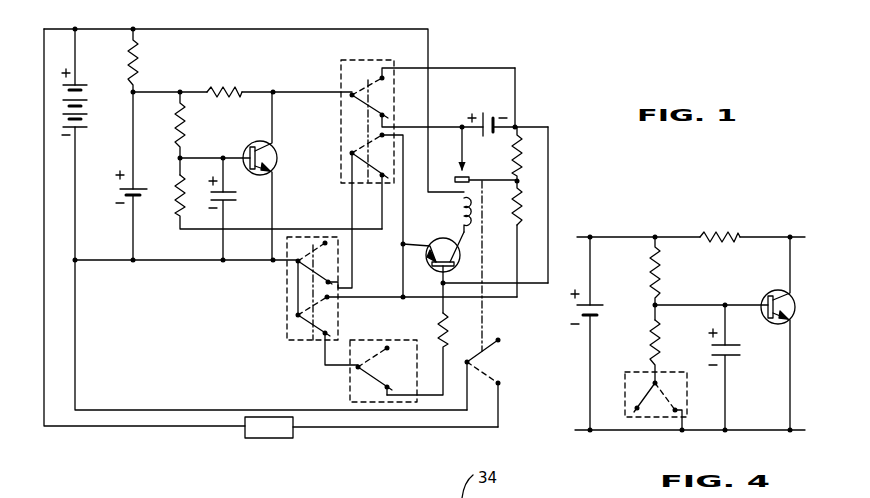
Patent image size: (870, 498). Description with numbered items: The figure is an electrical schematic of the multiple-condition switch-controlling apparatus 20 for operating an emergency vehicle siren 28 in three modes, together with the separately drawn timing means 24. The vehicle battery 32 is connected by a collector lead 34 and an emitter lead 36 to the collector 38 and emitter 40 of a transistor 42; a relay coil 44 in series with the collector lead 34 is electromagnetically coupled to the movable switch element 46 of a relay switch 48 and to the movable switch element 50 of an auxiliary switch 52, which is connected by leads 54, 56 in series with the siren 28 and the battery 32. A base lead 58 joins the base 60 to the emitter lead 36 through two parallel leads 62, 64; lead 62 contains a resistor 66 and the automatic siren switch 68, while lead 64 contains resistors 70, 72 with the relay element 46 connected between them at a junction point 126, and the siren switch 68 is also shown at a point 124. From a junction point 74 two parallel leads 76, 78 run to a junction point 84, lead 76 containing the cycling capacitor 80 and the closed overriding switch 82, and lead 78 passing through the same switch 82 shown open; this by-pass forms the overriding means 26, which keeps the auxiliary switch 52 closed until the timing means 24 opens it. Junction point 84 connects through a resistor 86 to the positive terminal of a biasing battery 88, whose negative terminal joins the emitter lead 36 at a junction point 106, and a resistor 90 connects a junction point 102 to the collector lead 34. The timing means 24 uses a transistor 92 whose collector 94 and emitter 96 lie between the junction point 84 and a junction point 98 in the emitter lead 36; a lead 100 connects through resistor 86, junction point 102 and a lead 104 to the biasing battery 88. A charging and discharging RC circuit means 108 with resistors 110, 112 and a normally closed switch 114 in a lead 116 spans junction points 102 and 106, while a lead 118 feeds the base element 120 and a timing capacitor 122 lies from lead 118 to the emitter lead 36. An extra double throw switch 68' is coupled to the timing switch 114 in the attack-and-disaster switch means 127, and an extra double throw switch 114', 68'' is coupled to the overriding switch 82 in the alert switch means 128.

In FIG. 1, the multiple-condition switch-controlling apparatus 20 is at (555, 144).
In FIG. 4, the timing means 24 is at (698, 206).
In FIG. 1, the overriding means 26 is at (460, 62).
In FIG. 1, the siren 28 is at (240, 434).
In FIG. 1, the battery 32 is at (89, 109).
In FIG. 1, the collector lead 34 is at (430, 43).
In FIG. 1, the emitter lead 36 is at (155, 262).
In FIG. 4, the emitter lead 36 is at (755, 432).
In FIG. 1, the collector 38 is at (452, 245).
In FIG. 1, the emitter 40 is at (445, 238).
In FIG. 1, the transistor 42 is at (467, 262).
In FIG. 1, the relay coil 44 is at (462, 210).
In FIG. 1, the movable switch element 46 is at (468, 180).
In FIG. 1, the relay switch 48 is at (452, 172).
In FIG. 1, the movable switch element 50 is at (488, 351).
In FIG. 1, the auxiliary switch 52 is at (505, 353).
In FIG. 1, the lead 54 is at (145, 408).
In FIG. 1, the lead 56 is at (72, 427).
In FIG. 1, the base lead 58 is at (442, 276).
In FIG. 1, the base 60 is at (452, 268).
In FIG. 1, the lead 62 is at (447, 307).
In FIG. 1, the lead 64 is at (518, 257).
In FIG. 1, the resistor 66 is at (440, 322).
In FIG. 1, the switch 68 is at (357, 371).
In FIG. 1, the extra double throw switch 68' is at (296, 341).
In FIG. 1, the extra double throw switch 68'' is at (368, 185).
In FIG. 1, the resistor 70 is at (518, 153).
In FIG. 1, the resistor 72 is at (517, 211).
In FIG. 1, the circuit junction point 74 is at (520, 126).
In FIG. 1, the lead 76 is at (413, 127).
In FIG. 1, the lead 78 is at (507, 68).
In FIG. 1, the cycling capacitor 80 is at (486, 107).
In FIG. 1, the overriding switch 82 is at (359, 105).
In FIG. 1, the circuit junction point 84 is at (275, 91).
In FIG. 4, the circuit junction point 84 is at (790, 235).
In FIG. 1, the resistor 86 is at (231, 88).
In FIG. 4, the resistor 86 is at (722, 235).
In FIG. 1, the biasing battery 88 is at (117, 195).
In FIG. 4, the biasing battery 88 is at (573, 315).
In FIG. 1, the resistor 90 is at (130, 51).
In FIG. 1, the transistor 92 is at (246, 143).
In FIG. 4, the transistor 92 is at (775, 287).
In FIG. 1, the collector 94 is at (273, 152).
In FIG. 4, the collector 94 is at (798, 298).
In FIG. 1, the emitter 96 is at (272, 161).
In FIG. 4, the emitter 96 is at (797, 312).
In FIG. 1, the circuit junction point 98 is at (270, 257).
In FIG. 4, the circuit junction point 98 is at (728, 428).
In FIG. 1, the lead 100 is at (196, 91).
In FIG. 4, the lead 100 is at (647, 235).
In FIG. 1, the circuit junction point 102 is at (134, 91).
In FIG. 4, the circuit junction point 102 is at (590, 235).
In FIG. 1, the lead 104 is at (129, 129).
In FIG. 4, the lead 104 is at (592, 270).
In FIG. 1, the circuit junction point 106 is at (128, 264).
In FIG. 4, the circuit junction point 106 is at (588, 432).
In FIG. 4, the charging and discharging RC circuit means 108 is at (693, 336).
In FIG. 1, the resistor 110 is at (176, 118).
In FIG. 4, the resistor 110 is at (648, 260).
In FIG. 1, the resistor 112 is at (177, 210).
In FIG. 4, the resistor 112 is at (650, 343).
In FIG. 1, the normally closed switch 114 is at (299, 228).
In FIG. 4, the normally closed switch 114 is at (656, 415).
In FIG. 1, the extra double throw switch 114' is at (344, 181).
In FIG. 1, the lead 116 is at (178, 167).
In FIG. 4, the lead 116 is at (652, 312).
In FIG. 1, the lead 118 is at (221, 170).
In FIG. 4, the lead 118 is at (729, 326).
In FIG. 1, the base element 120 is at (248, 156).
In FIG. 4, the base element 120 is at (763, 302).
In FIG. 1, the timing capacitor 122 is at (212, 198).
In FIG. 4, the timing capacitor 122 is at (734, 360).
In FIG. 1, the point 124 is at (403, 301).
In FIG. 1, the circuit junction point 126 is at (549, 168).
In FIG. 1, the 'ATTACK AND DISASTER' switch means 127 is at (283, 313).
In FIG. 1, the 'ALERT' switch means 128 is at (366, 57).